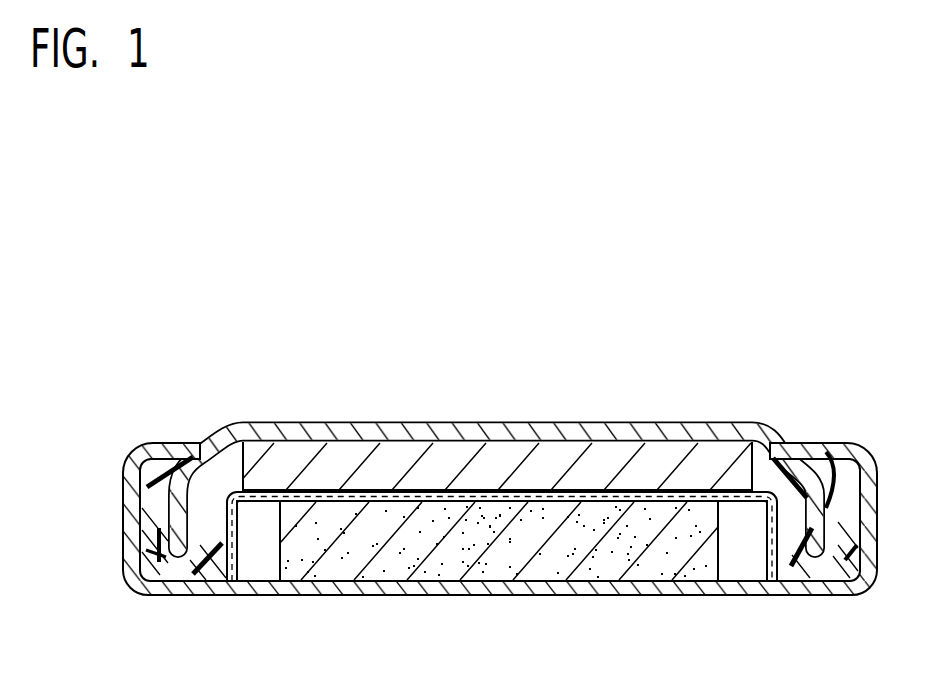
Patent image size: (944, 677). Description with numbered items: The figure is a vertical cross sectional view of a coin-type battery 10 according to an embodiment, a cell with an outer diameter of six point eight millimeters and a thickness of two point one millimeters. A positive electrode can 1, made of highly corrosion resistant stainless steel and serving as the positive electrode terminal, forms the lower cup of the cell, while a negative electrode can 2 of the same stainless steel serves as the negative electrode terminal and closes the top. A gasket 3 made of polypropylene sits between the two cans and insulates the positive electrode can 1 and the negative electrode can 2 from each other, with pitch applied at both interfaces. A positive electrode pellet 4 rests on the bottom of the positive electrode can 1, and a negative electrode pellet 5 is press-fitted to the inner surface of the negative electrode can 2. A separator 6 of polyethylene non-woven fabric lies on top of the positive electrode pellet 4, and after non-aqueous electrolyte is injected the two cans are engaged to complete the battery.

The positive electrode can 1 is at (767, 592).
The negative electrode can 2 is at (606, 440).
The gasket 3 is at (848, 445).
The positive electrode pellet 4 is at (400, 563).
The negative electrode pellet 5 is at (468, 456).
The separator 6 is at (314, 496).
The coin-type battery 10 is at (609, 289).